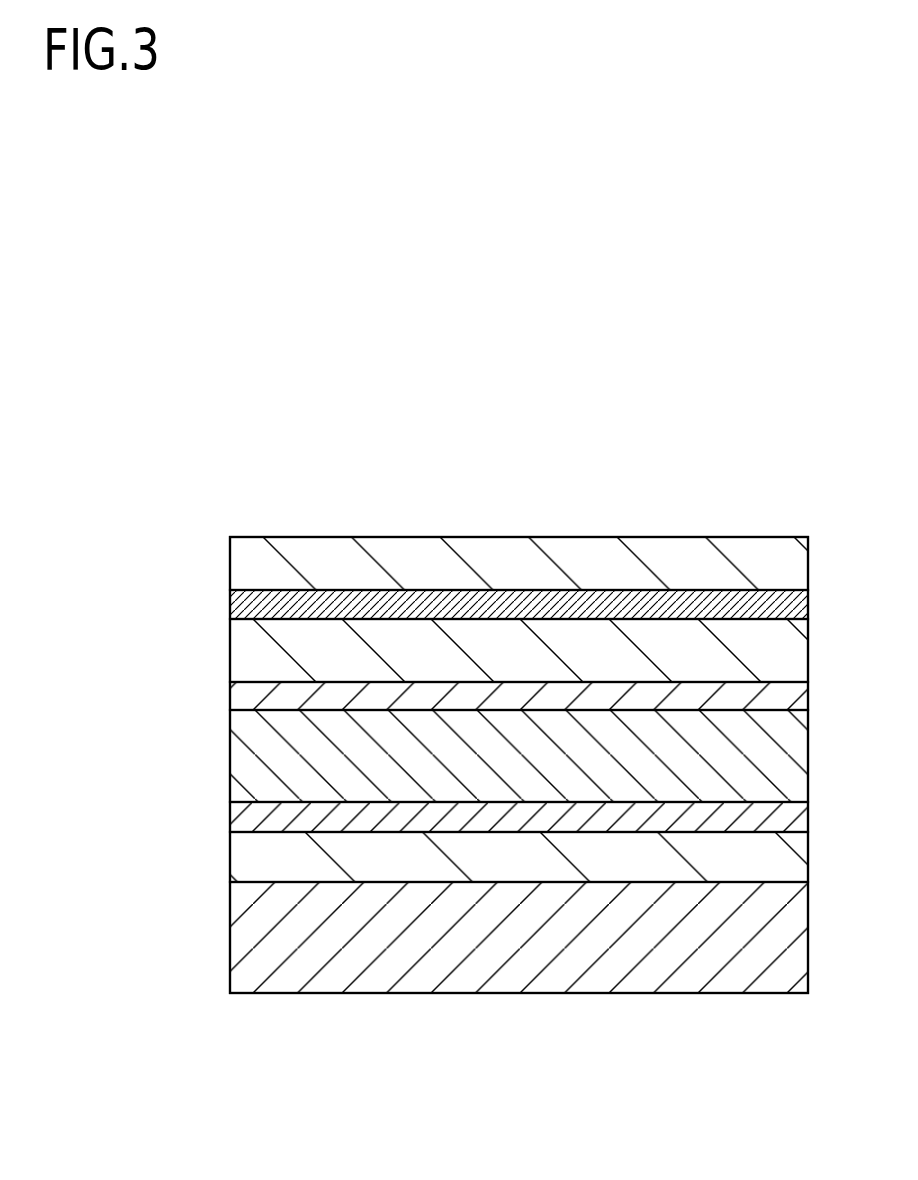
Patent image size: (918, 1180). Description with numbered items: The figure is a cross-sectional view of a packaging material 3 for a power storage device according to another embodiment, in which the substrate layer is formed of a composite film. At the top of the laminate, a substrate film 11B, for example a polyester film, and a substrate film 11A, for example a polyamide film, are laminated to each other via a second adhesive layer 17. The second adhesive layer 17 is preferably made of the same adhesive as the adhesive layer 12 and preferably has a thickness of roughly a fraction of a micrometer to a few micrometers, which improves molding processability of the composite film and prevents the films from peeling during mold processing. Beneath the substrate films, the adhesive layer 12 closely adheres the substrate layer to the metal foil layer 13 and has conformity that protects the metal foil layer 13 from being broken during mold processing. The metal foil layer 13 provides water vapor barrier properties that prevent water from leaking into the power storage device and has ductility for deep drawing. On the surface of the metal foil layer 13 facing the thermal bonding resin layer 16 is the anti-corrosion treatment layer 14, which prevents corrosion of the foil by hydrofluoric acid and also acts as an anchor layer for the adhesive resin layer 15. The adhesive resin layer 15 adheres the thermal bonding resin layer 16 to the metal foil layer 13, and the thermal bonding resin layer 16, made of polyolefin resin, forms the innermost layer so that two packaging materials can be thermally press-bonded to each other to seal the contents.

The packaging material 3 is at (408, 537).
The substrate film 11B is at (793, 570).
The second adhesive layer 17 is at (796, 609).
The substrate film 11A is at (793, 657).
The adhesive layer 12 is at (796, 695).
The metal foil layer 13 is at (793, 747).
The anti-corrosion treatment layer 14 is at (796, 817).
The adhesive resin layer 15 is at (793, 875).
The thermal bonding resin layer 16 is at (793, 959).